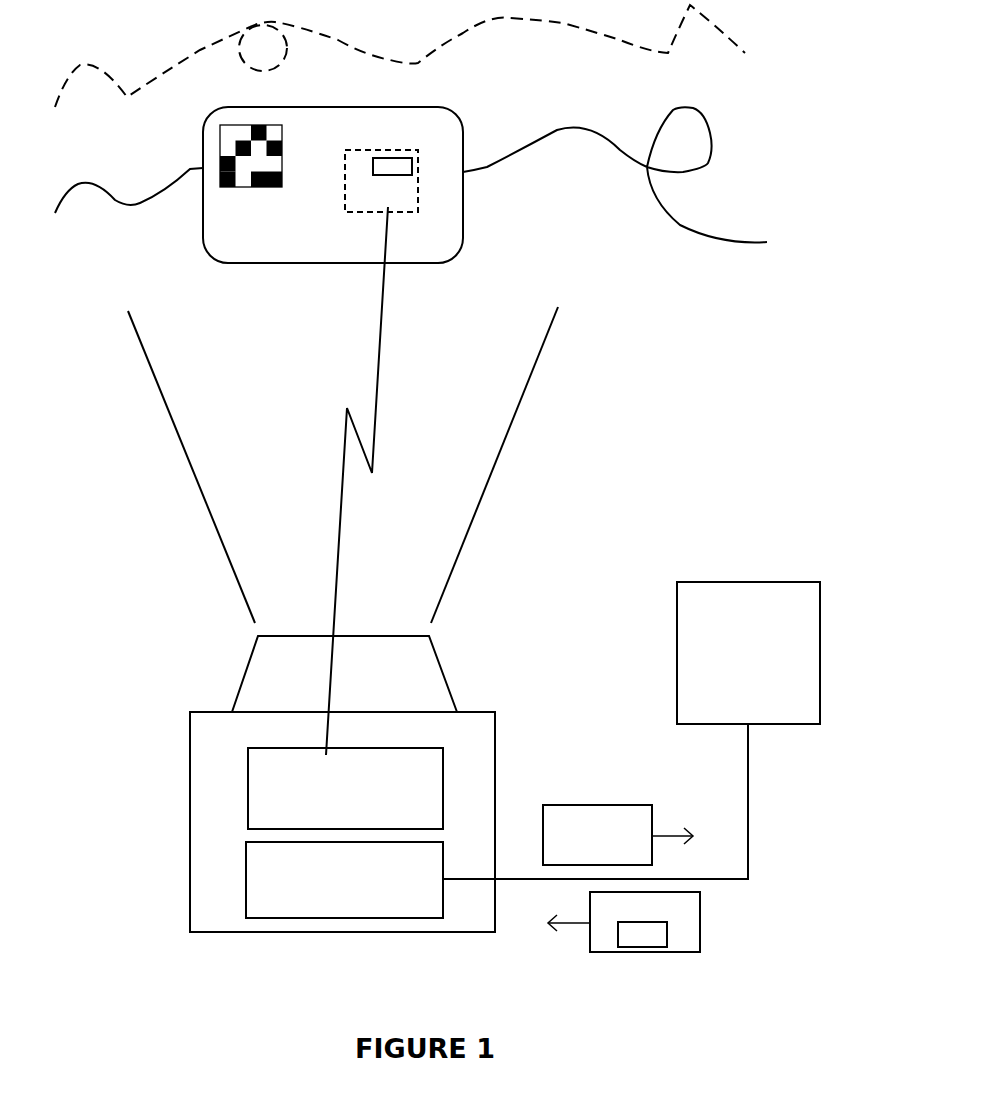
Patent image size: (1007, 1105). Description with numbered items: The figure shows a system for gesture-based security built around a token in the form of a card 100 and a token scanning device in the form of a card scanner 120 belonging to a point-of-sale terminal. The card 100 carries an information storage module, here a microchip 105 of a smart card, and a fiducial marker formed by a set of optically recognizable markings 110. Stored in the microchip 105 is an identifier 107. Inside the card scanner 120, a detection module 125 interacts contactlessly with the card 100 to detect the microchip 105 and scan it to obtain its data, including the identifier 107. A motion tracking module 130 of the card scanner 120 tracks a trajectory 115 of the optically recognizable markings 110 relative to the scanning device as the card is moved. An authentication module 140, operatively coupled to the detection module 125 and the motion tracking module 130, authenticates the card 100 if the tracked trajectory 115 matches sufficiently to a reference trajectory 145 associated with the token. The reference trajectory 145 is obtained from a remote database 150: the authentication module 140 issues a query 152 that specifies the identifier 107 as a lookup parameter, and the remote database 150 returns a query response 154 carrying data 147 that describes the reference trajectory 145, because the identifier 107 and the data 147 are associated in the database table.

The card 100 is at (200, 140).
The microchip 105 is at (408, 213).
The identifier 107 is at (412, 173).
The optically recognizable markings 110 is at (282, 125).
The trajectory 115 is at (72, 185).
The card scanner 120 is at (182, 718).
The detection module 125 is at (345, 788).
The motion tracking module 130 is at (249, 670).
The authentication module 140 is at (344, 880).
The reference trajectory 145 is at (83, 63).
The data 147 is at (642, 934).
The remote database 150 is at (748, 653).
The query 152 is at (618, 835).
The query response 154 is at (624, 922).